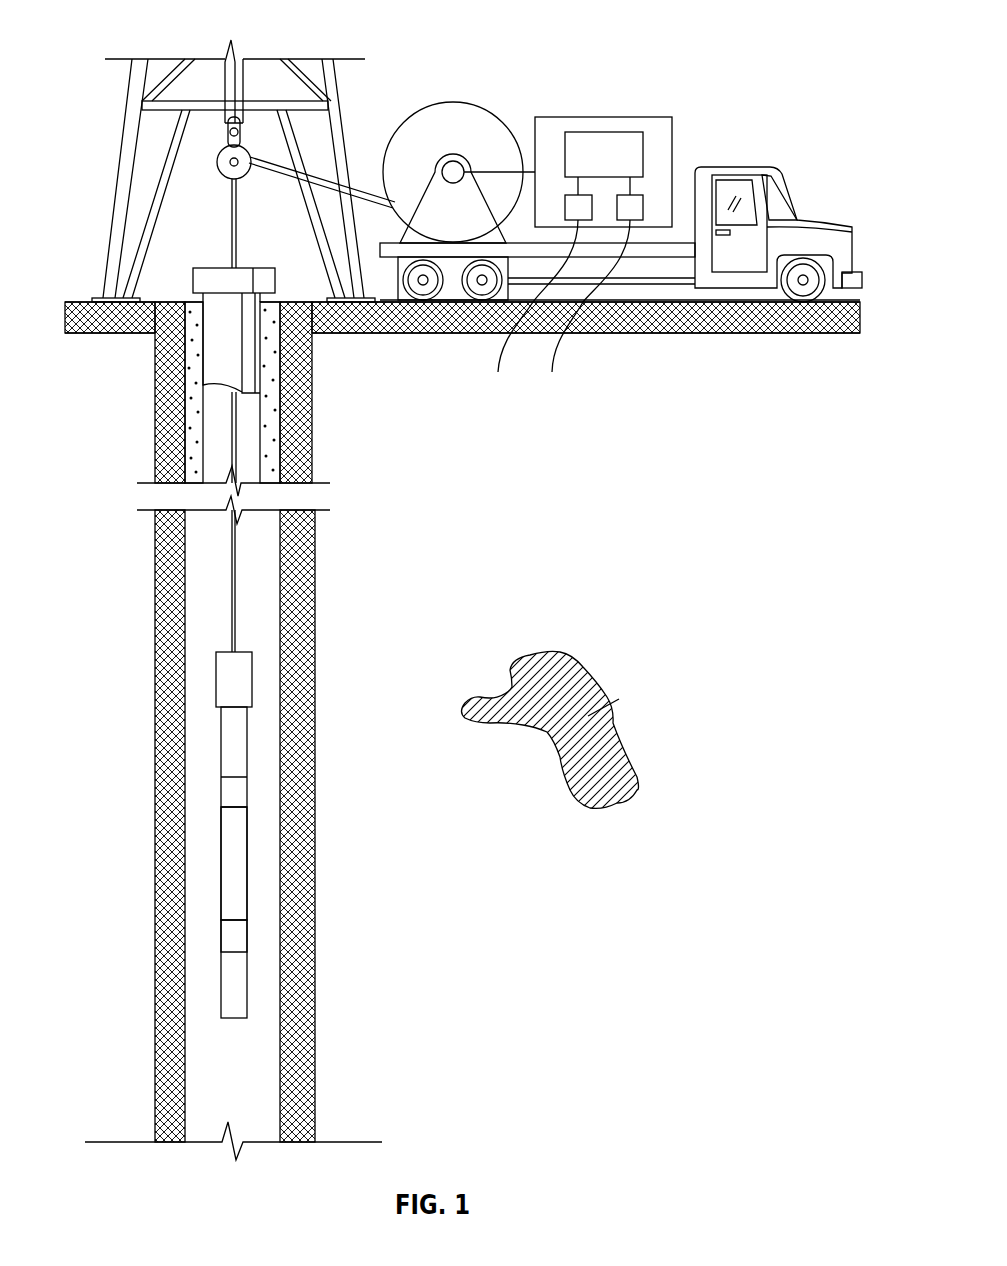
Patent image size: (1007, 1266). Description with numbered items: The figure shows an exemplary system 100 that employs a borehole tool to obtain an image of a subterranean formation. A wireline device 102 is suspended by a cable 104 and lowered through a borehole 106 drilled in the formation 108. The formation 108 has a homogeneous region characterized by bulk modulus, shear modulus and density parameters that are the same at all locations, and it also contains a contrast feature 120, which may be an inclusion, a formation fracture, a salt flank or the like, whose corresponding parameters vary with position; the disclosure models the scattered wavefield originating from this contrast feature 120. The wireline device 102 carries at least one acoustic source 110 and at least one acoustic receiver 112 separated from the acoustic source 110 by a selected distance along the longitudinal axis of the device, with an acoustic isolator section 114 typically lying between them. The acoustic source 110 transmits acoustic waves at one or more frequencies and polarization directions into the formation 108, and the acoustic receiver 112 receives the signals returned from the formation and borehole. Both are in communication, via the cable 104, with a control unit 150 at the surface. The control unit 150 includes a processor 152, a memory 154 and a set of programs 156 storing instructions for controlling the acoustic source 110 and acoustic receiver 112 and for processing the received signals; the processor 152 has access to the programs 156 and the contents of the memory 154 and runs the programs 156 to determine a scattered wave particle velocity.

The system 100 is at (712, 43).
The wireline device 102 is at (141, 676).
The cable 104 is at (230, 607).
The borehole 106 is at (195, 1065).
The formation 108 is at (305, 698).
The acoustic source 110 is at (230, 790).
The acoustic receiver 112 is at (227, 938).
The acoustic isolator section 114 is at (227, 862).
The contrast feature 120 is at (560, 652).
The control unit 150 is at (673, 143).
The processor 152 is at (586, 132).
The memory 154 is at (531, 310).
The set of programs 156 is at (582, 310).